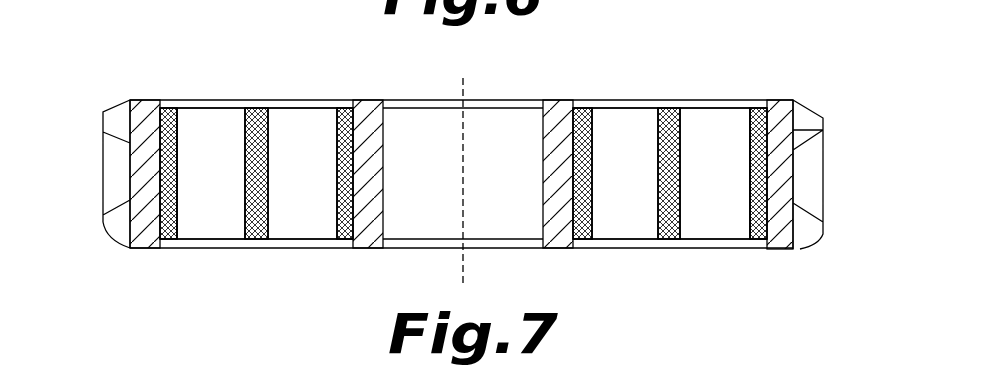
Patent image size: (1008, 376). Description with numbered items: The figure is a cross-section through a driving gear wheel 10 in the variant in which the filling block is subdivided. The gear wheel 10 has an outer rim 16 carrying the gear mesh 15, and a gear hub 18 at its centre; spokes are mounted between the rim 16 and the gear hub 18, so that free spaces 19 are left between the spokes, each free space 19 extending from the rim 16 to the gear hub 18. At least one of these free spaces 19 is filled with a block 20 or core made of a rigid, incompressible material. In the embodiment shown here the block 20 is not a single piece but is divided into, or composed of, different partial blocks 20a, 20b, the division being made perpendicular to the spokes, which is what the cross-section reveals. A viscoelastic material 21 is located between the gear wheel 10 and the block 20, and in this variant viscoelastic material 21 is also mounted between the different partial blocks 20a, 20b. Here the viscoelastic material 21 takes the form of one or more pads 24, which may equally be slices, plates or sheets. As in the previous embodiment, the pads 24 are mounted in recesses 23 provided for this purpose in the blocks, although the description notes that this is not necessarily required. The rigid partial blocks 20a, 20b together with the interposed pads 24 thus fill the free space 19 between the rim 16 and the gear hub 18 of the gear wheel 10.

The driving gear wheel 10 is at (113, 56).
The gear mesh 15 is at (116, 107).
The rim 16 is at (152, 140).
The gear hub 18 is at (368, 236).
The free space 19 is at (236, 108).
The block 20 is at (197, 117).
The partial block 20a is at (213, 218).
The partial block 20b is at (308, 230).
The viscoelastic material 21 is at (172, 82).
The recess 23 is at (157, 236).
The pad 24 is at (164, 123).